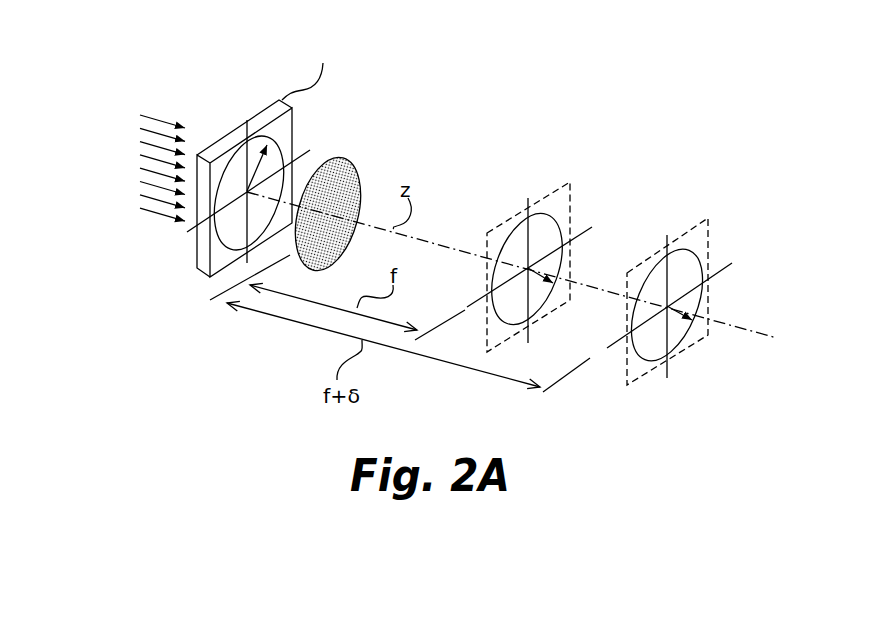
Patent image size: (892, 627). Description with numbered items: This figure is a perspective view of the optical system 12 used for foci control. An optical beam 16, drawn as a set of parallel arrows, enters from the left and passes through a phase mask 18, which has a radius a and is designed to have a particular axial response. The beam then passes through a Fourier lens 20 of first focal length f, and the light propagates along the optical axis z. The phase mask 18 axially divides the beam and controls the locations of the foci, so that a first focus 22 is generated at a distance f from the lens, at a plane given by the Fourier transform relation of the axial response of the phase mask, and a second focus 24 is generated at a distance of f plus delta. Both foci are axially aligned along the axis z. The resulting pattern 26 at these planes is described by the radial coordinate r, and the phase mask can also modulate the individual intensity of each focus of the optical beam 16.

The optical system 12 is at (490, 78).
The optical beam 16 is at (158, 217).
The phase mask 18 is at (276, 102).
The Fourier lens 20 is at (347, 157).
The first focus 22 is at (523, 232).
The second focus 24 is at (683, 280).
The resulting pattern 26 is at (636, 226).